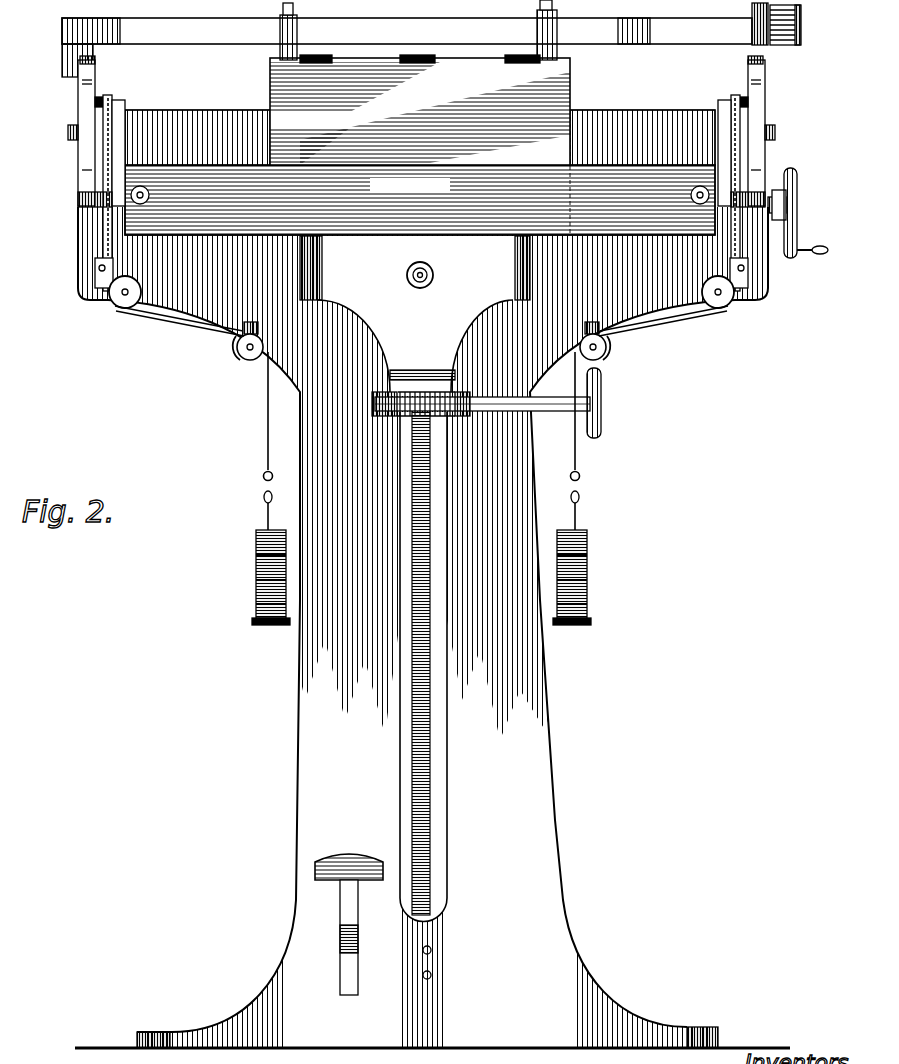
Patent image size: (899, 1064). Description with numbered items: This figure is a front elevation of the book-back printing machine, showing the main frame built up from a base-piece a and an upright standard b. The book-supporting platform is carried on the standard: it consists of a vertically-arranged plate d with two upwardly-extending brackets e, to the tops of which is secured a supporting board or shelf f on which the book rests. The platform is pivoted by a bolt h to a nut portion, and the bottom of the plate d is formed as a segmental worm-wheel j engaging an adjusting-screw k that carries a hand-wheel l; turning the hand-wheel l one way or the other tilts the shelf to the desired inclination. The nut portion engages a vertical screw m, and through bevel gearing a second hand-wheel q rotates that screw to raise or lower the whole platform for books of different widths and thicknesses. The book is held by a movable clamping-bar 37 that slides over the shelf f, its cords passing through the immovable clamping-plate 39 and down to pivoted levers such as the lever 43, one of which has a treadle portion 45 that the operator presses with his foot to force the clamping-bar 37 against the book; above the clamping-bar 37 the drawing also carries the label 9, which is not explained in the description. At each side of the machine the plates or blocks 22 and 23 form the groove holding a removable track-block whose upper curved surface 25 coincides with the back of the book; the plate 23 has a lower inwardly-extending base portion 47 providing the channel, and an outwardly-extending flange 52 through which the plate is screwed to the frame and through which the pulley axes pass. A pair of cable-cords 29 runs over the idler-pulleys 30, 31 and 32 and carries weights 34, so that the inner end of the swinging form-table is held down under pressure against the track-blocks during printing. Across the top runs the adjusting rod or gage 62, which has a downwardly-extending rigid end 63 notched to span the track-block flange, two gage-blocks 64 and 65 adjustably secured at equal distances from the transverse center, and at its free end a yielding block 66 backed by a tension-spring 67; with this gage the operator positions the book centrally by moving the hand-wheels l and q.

The adjusting rod or gage 62 is at (407, 31).
The rigid end 63 is at (64, 60).
The gage-block 64 is at (281, 50).
The gage-block 65 is at (561, 50).
The yielding or movable block 66 is at (755, 33).
The tension-spring 67 is at (779, 46).
The plate or block 23 is at (100, 98).
The upper curved surface 25 is at (80, 92).
The idler-pulley 32 is at (110, 98).
The plate or block 22 is at (70, 155).
The outwardly-extending flange 52 is at (118, 153).
The inwardly-extending base portion 47 is at (76, 212).
The cable-cord 29 is at (106, 234).
The idler-pulley 31 is at (122, 308).
The idler-pulley 30 is at (246, 356).
The weight 34 is at (256, 568).
The immovable clamping-plate 39 is at (420, 172).
The clamping-bar 37 is at (420, 200).
The bed 9 is at (420, 110).
The bolt h is at (435, 275).
The vertically-arranged plate d is at (416, 316).
The upwardly-extending bracket e is at (300, 285).
The supporting board or shelf f is at (272, 234).
The segmental worm-wheel j is at (455, 386).
The adjusting-screw k is at (398, 417).
The hand-wheel l is at (599, 400).
The screw m is at (432, 520).
The standard b is at (423, 628).
The treadle portion 45 is at (353, 852).
The pivoted lever 43 is at (342, 918).
The base-piece a is at (151, 1032).
The hand-wheel q is at (790, 208).